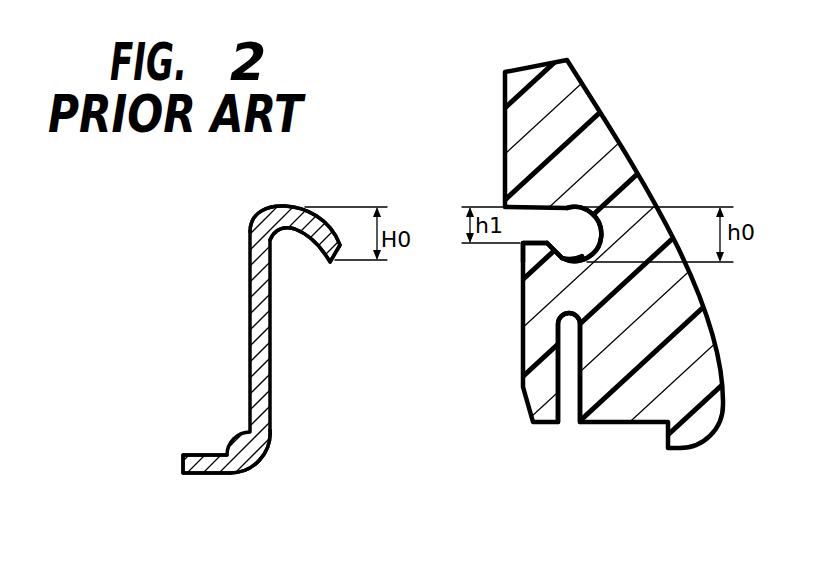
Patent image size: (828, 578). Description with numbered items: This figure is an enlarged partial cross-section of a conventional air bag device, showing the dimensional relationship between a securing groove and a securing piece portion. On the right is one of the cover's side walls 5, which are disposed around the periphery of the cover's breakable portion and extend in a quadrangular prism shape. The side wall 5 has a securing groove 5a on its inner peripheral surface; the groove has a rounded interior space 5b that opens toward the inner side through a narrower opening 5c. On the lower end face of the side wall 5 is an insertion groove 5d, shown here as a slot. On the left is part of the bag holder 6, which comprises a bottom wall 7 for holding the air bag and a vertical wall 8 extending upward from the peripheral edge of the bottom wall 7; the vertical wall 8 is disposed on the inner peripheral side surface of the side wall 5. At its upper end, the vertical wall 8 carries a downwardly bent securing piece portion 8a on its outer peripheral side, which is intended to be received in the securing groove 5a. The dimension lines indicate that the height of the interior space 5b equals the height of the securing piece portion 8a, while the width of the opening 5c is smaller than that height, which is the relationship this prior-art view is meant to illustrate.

The side wall 5 is at (585, 93).
The securing groove 5a is at (540, 221).
The interior space 5b is at (572, 249).
The opening 5c is at (531, 240).
The insertion groove 5d is at (570, 416).
The bag holder 6 is at (257, 473).
The bottom wall 7 is at (203, 477).
The vertical wall 8 is at (260, 332).
The securing piece portion 8a is at (282, 213).